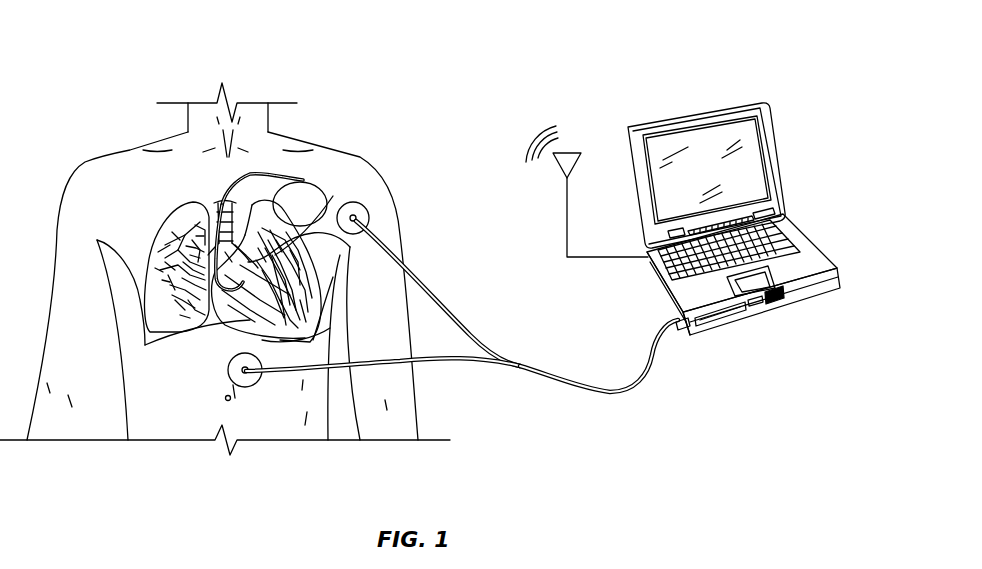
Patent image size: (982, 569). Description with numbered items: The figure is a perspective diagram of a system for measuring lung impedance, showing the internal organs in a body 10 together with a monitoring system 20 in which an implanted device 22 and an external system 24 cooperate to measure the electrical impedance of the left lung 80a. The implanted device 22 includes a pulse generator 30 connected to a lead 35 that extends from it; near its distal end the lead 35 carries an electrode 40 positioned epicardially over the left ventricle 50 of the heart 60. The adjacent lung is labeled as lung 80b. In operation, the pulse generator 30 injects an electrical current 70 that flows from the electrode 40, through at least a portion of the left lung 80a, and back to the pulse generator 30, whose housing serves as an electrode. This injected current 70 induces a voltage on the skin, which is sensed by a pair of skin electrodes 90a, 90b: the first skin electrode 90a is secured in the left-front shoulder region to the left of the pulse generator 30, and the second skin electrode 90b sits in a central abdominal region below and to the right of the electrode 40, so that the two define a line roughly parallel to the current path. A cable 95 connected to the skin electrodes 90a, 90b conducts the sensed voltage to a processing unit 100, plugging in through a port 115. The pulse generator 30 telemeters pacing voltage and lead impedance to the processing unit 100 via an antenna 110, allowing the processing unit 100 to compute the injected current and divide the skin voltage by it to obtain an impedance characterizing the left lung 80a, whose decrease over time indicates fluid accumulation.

The body 10 is at (117, 150).
The monitoring system 20 is at (126, 30).
The implanted device 22 is at (320, 122).
The external system 24 is at (534, 398).
The pulse generator 30 is at (318, 183).
The lead 35 is at (227, 193).
The electrode 40 is at (250, 313).
The left ventricle 50 is at (365, 238).
The heart 60 is at (253, 368).
The electrical current 70 is at (333, 196).
The left lung 80a is at (308, 305).
The left lung 80b is at (157, 232).
The first skin electrode 90a is at (370, 207).
The second skin electrode 90b is at (247, 385).
The cable 95 is at (601, 390).
The processing unit 100 is at (806, 236).
The antenna 110 is at (567, 150).
The port 115 is at (683, 340).